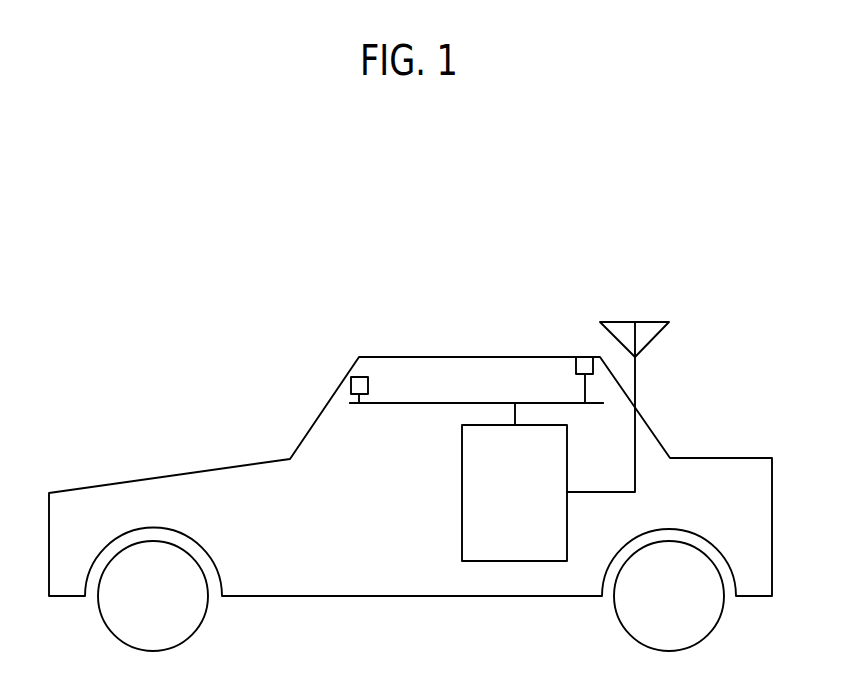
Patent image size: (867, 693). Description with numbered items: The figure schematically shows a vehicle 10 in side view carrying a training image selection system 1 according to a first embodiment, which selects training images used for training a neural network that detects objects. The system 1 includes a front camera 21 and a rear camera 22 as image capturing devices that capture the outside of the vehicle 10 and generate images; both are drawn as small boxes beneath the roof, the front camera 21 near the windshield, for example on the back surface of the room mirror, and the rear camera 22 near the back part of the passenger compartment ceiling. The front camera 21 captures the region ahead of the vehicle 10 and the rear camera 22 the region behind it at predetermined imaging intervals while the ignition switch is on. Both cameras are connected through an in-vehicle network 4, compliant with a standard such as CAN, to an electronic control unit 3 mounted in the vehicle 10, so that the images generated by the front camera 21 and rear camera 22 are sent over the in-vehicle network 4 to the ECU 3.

The training image selection system 1 is at (428, 286).
The vehicle 10 is at (335, 440).
The electronic control unit 3 is at (510, 562).
The in-vehicle network 4 is at (472, 402).
The front camera 21 is at (365, 377).
The rear camera 22 is at (576, 367).